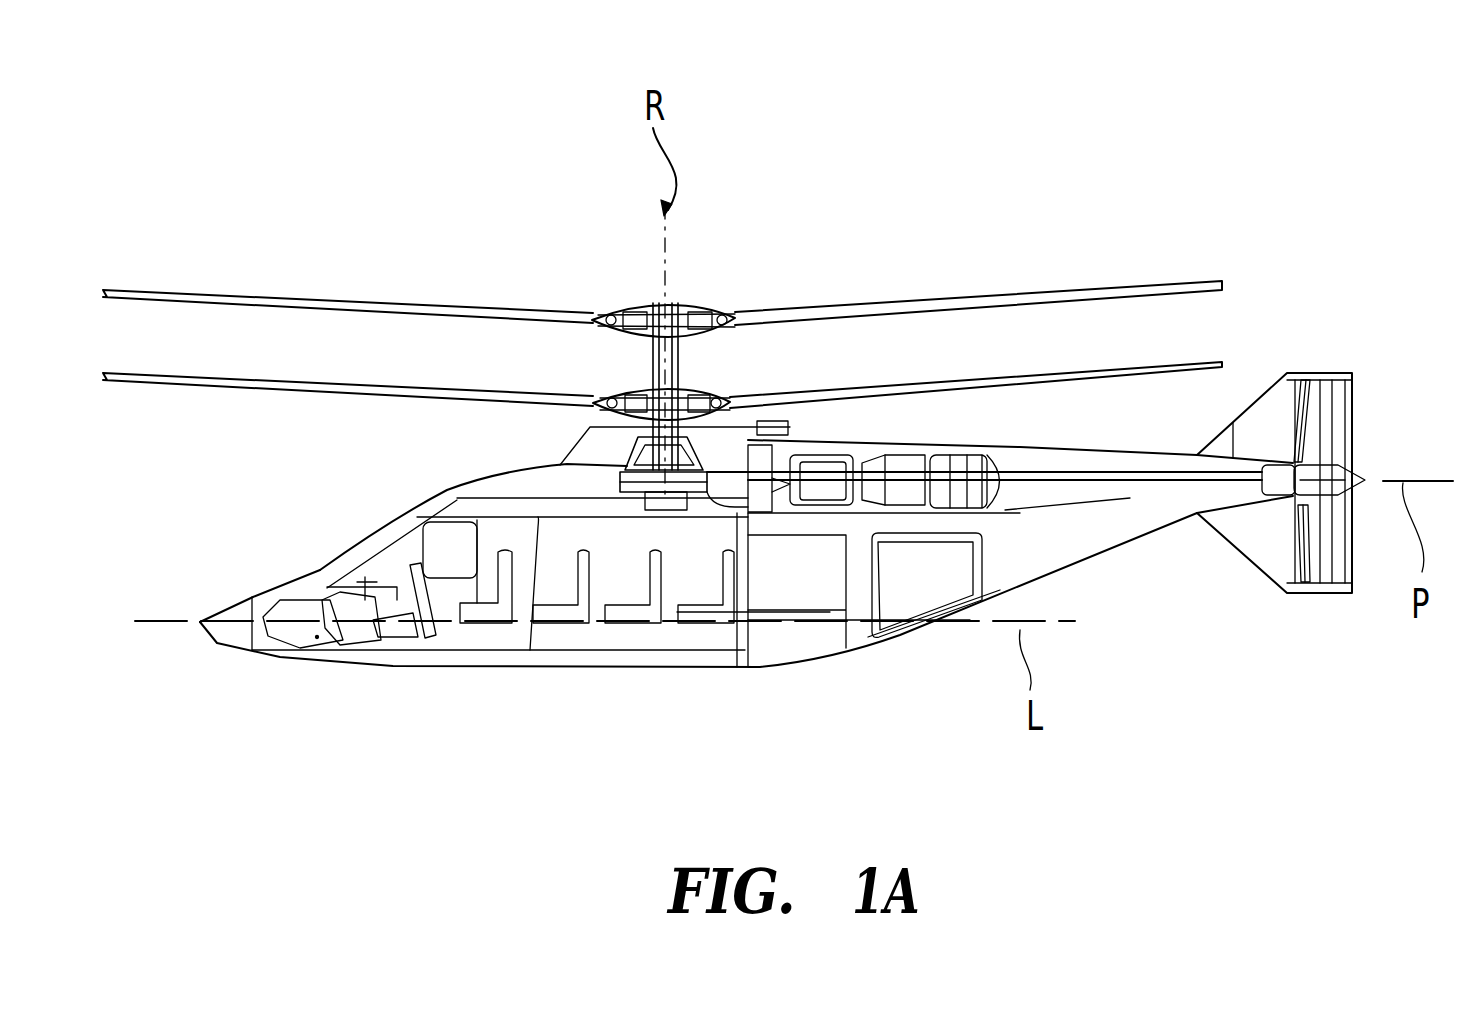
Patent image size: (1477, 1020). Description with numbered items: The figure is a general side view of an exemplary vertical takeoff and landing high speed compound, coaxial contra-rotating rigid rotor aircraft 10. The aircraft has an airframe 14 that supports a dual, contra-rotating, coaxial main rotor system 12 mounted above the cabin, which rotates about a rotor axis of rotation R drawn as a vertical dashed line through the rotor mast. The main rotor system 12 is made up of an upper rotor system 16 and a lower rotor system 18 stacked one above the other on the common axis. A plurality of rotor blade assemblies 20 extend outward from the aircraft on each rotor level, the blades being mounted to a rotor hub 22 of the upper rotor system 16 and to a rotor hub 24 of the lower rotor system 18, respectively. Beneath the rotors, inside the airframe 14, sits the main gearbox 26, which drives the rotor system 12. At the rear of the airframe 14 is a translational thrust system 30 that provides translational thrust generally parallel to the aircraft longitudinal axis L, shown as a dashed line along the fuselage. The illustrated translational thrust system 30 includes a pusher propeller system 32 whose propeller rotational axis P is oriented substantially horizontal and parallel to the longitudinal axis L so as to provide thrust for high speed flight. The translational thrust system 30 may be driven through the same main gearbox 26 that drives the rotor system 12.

The rotary wing aircraft 10 is at (975, 167).
The main rotor system 12 is at (729, 301).
The airframe 14 is at (452, 494).
The upper rotor system 16 is at (636, 301).
The lower rotor system 18 is at (699, 391).
The rotor blade assemblies 20 is at (868, 300).
The rotor hub 22 is at (688, 303).
The rotor hub 24 is at (622, 396).
The main gearbox 26 is at (618, 468).
The translational thrust system 30 is at (1364, 394).
The pusher propeller system 32 is at (1308, 436).